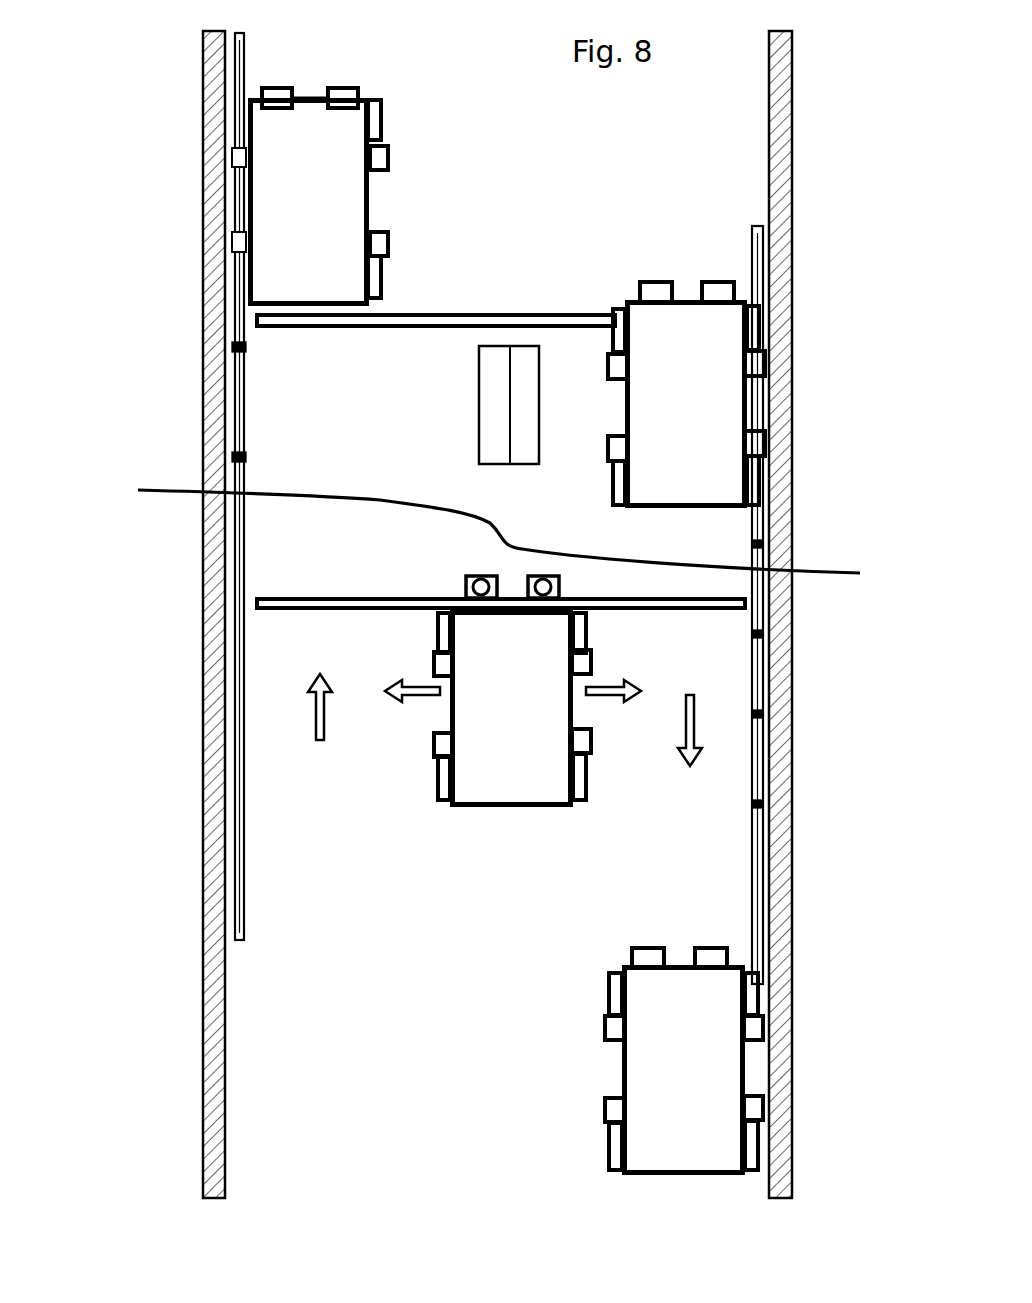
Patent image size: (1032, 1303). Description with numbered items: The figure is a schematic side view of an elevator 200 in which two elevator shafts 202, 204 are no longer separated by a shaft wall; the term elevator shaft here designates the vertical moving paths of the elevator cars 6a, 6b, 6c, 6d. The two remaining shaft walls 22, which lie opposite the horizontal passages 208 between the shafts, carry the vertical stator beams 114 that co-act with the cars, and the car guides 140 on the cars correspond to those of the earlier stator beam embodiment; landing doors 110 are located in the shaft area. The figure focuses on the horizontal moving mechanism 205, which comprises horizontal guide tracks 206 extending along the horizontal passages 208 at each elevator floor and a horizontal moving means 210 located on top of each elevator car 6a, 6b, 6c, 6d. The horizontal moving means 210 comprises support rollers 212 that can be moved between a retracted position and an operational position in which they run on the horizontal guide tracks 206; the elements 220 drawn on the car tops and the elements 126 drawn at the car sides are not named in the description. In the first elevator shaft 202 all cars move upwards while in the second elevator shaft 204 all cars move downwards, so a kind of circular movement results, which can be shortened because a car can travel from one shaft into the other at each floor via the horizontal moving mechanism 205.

The elevator 200 is at (135, 95).
The shaft wall 22 is at (790, 80).
The vertical stator beam 114 is at (762, 226).
The horizontal guide track 206 is at (312, 320).
The landing door 110 is at (497, 406).
The horizontal passage 208 is at (480, 918).
The first elevator shaft 202 is at (288, 892).
The second elevator shaft 204 is at (722, 850).
The horizontal moving mechanism 205 is at (630, 245).
The elevator car 6a is at (318, 228).
The elevator car 6b is at (690, 428).
The elevator car 6c is at (528, 720).
The elevator car 6d is at (700, 1080).
The tab 220 is at (282, 92).
The horizontal moving means 210 is at (346, 86).
The support roller 212 is at (540, 578).
The bracket 126 is at (380, 120).
The car guide 140 is at (382, 242).